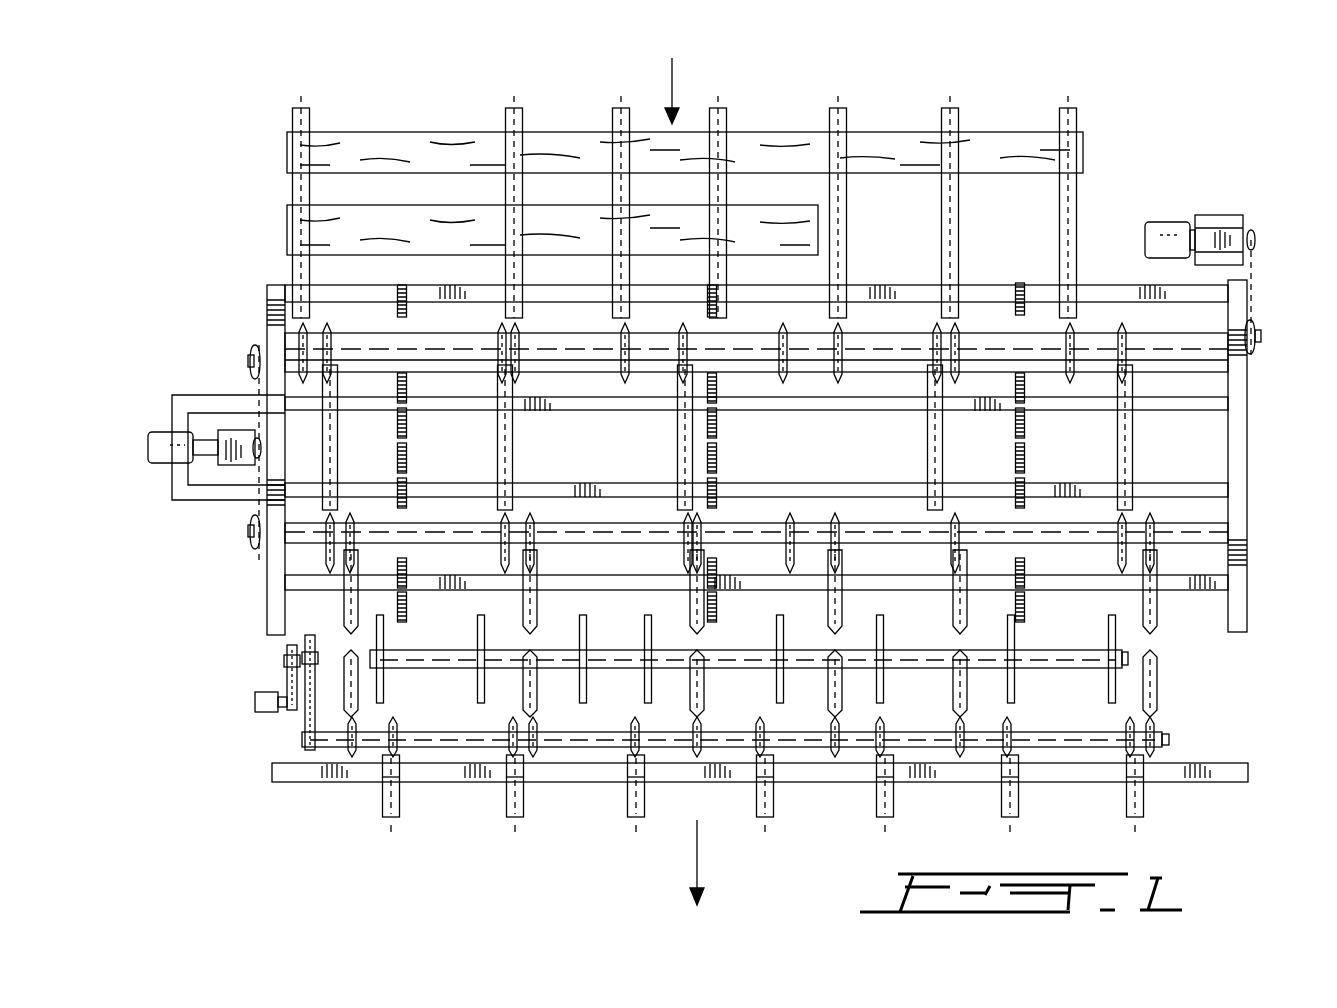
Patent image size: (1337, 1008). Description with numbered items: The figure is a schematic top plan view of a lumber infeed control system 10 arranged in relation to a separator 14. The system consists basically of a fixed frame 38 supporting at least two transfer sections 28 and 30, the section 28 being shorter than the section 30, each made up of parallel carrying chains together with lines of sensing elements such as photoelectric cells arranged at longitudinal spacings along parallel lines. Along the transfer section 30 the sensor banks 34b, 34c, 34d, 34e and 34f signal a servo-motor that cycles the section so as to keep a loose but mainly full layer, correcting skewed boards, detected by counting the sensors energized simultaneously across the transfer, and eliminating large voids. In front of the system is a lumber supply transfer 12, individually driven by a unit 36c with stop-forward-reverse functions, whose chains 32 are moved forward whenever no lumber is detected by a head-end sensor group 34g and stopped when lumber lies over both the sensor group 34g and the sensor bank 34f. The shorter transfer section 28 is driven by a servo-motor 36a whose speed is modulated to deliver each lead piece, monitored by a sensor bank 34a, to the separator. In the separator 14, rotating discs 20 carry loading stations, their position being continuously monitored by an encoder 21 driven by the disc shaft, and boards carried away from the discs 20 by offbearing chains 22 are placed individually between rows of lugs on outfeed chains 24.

The infeed control system 10 is at (1192, 458).
The lumber supply transfer 12 is at (262, 205).
The separator 14 is at (1200, 660).
The rotating discs 20 is at (380, 690).
The encoder 21 is at (262, 708).
The offbearing chains 22 is at (530, 690).
The outfeed chains 24 is at (385, 788).
The transfer section 28 is at (540, 590).
The transfer section 30 is at (515, 465).
The chains 32 is at (621, 122).
The sensor bank 34a is at (405, 622).
The sensor bank 34b is at (408, 580).
The sensor bank 34c is at (408, 492).
The sensor bank 34d is at (408, 457).
The sensor bank 34e is at (408, 422).
The sensor bank 34f is at (408, 385).
The sensor group 34g is at (408, 308).
The servo-motor 36a is at (237, 470).
The drive unit 36c is at (1222, 240).
The fixed frame 38 is at (270, 312).